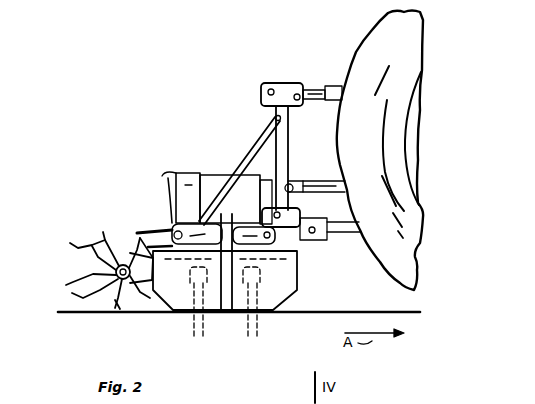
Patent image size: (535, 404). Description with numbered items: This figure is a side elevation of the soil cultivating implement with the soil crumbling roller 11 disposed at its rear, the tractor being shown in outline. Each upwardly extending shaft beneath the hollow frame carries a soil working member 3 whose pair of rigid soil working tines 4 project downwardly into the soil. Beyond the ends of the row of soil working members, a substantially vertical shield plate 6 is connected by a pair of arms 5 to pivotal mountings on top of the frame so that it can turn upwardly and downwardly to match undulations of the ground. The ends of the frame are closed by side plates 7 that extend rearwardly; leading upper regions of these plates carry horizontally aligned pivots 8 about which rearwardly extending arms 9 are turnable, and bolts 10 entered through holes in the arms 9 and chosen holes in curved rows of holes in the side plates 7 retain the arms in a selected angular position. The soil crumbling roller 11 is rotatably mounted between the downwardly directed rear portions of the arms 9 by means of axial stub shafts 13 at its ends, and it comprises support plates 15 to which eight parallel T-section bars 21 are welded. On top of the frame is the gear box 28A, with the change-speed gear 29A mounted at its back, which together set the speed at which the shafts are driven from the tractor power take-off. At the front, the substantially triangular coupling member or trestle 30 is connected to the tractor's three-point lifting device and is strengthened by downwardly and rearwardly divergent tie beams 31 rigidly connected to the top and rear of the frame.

The soil working member 3 is at (200, 337).
The soil working tines 4 is at (240, 337).
The arms 5 is at (233, 218).
The shield plates 6 is at (293, 281).
The side plates 7 is at (168, 188).
The pivots 8 is at (237, 274).
The arms 9 is at (140, 230).
The bolts 10 is at (172, 226).
The soil crumbling roller 11 is at (72, 244).
The stub shafts 13 is at (104, 240).
The support plates 15 is at (113, 308).
The T-section bar 21 is at (74, 283).
The gear box 28A is at (219, 175).
The change-speed gear 29A is at (166, 175).
The coupling member or trestle 30 is at (291, 153).
The tie beams 31 is at (276, 121).